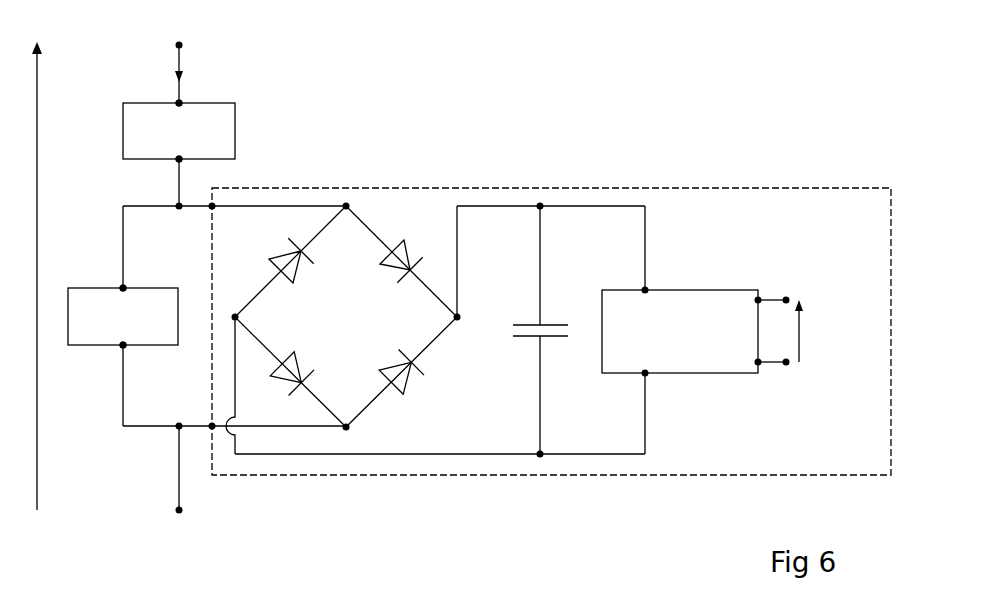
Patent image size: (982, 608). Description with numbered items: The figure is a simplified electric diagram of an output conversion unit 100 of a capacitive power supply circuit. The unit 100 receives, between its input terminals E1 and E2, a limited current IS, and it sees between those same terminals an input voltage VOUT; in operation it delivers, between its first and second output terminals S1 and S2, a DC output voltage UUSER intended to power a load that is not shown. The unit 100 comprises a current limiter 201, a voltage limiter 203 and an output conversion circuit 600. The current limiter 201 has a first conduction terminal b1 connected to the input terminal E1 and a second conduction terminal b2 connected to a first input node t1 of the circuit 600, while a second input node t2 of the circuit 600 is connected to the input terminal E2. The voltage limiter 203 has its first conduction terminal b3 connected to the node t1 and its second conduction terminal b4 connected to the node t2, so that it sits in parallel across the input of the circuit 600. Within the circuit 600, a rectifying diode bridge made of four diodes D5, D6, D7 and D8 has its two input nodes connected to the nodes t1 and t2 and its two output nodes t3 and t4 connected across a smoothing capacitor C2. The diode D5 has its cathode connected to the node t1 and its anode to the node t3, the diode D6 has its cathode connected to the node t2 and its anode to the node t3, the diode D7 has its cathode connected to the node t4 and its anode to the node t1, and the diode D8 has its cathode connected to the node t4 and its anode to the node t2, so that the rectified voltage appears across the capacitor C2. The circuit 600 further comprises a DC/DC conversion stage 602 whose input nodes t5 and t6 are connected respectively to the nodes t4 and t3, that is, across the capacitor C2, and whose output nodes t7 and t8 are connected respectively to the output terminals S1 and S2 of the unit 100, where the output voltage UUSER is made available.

The output conversion unit 100 is at (745, 132).
The output conversion circuit 600 is at (370, 476).
The current limiter 201 is at (237, 128).
The voltage limiter 203 is at (93, 348).
The DC/DC conversion stage 602 is at (692, 341).
The first input terminal E1 is at (176, 45).
The second input terminal E2 is at (177, 509).
The supplied current IS is at (191, 77).
The input voltage of the output conversion unit VOUT is at (64, 276).
The first conduction terminal of current limiter b1 is at (176, 105).
The second conduction terminal of current limiter b2 is at (181, 157).
The first conduction terminal of voltage limiter b3 is at (121, 290).
The second conduction terminal of voltage limiter b4 is at (125, 343).
The first input node t1 is at (211, 208).
The second input node t2 is at (211, 424).
The rectifying bridge output node t3 is at (235, 316).
The rectifying bridge output node t4 is at (458, 316).
The input node of DC/DC conversion stage t5 is at (644, 291).
The input node of DC/DC conversion stage t6 is at (644, 372).
The output node of DC/DC conversion stage t7 is at (757, 300).
The output node of DC/DC conversion stage t8 is at (757, 362).
The first output terminal S1 is at (786, 299).
The second output terminal S2 is at (787, 363).
The diode D5 is at (295, 272).
The diode D6 is at (296, 350).
The diode D7 is at (382, 263).
The diode D8 is at (406, 393).
The smoothing capacitor C2 is at (546, 324).
The DC output voltage UUSER is at (832, 331).